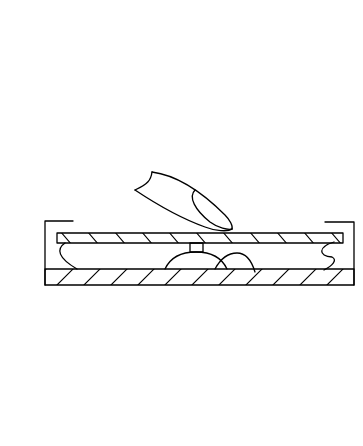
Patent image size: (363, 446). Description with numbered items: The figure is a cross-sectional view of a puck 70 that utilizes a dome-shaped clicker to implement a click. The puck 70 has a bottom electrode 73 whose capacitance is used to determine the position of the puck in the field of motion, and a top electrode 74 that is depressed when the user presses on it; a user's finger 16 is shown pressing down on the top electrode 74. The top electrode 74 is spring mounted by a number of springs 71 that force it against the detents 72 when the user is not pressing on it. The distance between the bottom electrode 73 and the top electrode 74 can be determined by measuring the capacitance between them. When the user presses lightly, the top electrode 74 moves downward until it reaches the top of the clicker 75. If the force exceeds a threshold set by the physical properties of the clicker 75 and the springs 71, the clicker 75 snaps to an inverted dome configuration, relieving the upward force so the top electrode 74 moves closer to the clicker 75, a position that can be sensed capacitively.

The puck 70 is at (44, 126).
The finger 16 is at (165, 177).
The springs 71 is at (63, 263).
The detents 72 is at (53, 221).
The bottom electrode 73 is at (63, 280).
The top electrode 74 is at (293, 242).
The clicker 75 is at (255, 272).